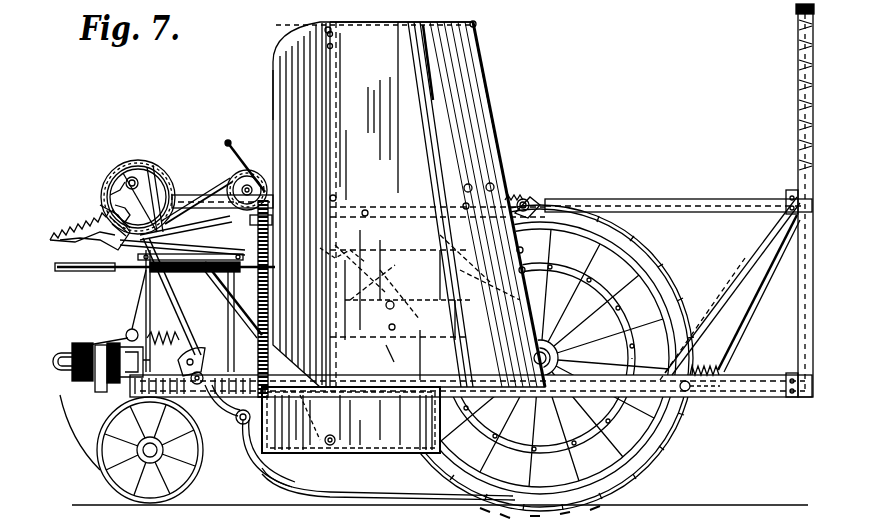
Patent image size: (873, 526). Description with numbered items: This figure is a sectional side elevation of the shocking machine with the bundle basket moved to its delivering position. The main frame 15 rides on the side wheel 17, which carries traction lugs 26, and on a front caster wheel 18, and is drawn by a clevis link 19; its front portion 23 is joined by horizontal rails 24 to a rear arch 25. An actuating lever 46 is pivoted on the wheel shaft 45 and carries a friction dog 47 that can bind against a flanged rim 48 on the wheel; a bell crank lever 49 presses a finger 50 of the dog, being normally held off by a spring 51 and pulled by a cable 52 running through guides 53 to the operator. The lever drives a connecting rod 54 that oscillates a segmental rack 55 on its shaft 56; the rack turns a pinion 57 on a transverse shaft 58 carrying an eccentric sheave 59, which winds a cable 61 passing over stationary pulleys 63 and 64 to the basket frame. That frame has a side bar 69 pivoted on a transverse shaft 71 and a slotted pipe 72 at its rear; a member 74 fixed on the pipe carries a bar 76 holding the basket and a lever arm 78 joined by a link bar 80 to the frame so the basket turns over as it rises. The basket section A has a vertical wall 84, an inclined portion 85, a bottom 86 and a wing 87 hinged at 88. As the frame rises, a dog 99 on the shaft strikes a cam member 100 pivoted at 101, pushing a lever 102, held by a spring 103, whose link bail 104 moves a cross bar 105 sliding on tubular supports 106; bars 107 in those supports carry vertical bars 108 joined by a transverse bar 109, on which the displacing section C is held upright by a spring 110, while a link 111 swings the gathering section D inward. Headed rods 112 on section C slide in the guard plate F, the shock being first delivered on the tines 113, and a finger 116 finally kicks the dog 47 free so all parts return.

The basket side section A is at (468, 98).
The displacing section C is at (226, 143).
The gathering section D is at (322, 252).
The guard plate F is at (351, 420).
The main frame 15 is at (742, 397).
The side wheel 17 is at (650, 479).
The front caster wheel 18 is at (100, 472).
The clevis link 19 is at (66, 373).
The front frame portion 23 is at (165, 176).
The horizontal rails 24 is at (625, 203).
The rear arch 25 is at (797, 106).
The traction lugs 26 is at (660, 444).
The wheel shaft 45 is at (558, 358).
The actuating lever 46 is at (558, 322).
The friction dog 47 is at (525, 270).
The flanged rim 48 is at (590, 447).
The bell crank lever 49 is at (690, 398).
The finger 50 is at (523, 249).
The spring 51 is at (700, 366).
The cable 52 is at (712, 352).
The guides 53 is at (796, 10).
The connecting rod 54 is at (178, 234).
The segmental rack 55 is at (68, 218).
The rack shaft 56 is at (126, 334).
The pinion 57 is at (108, 190).
The transverse shaft 58 is at (133, 177).
The sheave 59 is at (172, 186).
The cable 61 is at (204, 195).
The pulley 63 is at (250, 170).
The pulley 64 is at (391, 300).
The basket frame side bar 69 is at (527, 200).
The transverse shaft 71 is at (250, 456).
The transverse pipe 72 is at (540, 205).
The member 74 is at (510, 198).
The bar 76 is at (367, 211).
The lever arm 78 is at (492, 184).
The link bar 80 is at (390, 355).
The vertical wall portion 84 is at (380, 32).
The lower inclined portion 85 is at (470, 55).
The bottom portion 86 is at (487, 118).
The wing 87 is at (272, 88).
The hinge 88 is at (326, 28).
The dog 99 is at (240, 422).
The cam member 100 is at (212, 397).
The cam pivot 101 is at (203, 376).
The lever 102 is at (176, 306).
The spring 103 is at (180, 336).
The link bail 104 is at (186, 254).
The cross bar 105 is at (212, 270).
The tubular supports 106 is at (100, 272).
The sliding bars 107 is at (68, 272).
The vertical bars 108 is at (258, 226).
The transverse bar 109 is at (200, 350).
The spring 110 is at (258, 322).
The link 111 is at (197, 236).
The headed rod 112 is at (296, 418).
The tines 113 is at (370, 490).
The finger 116 is at (396, 326).